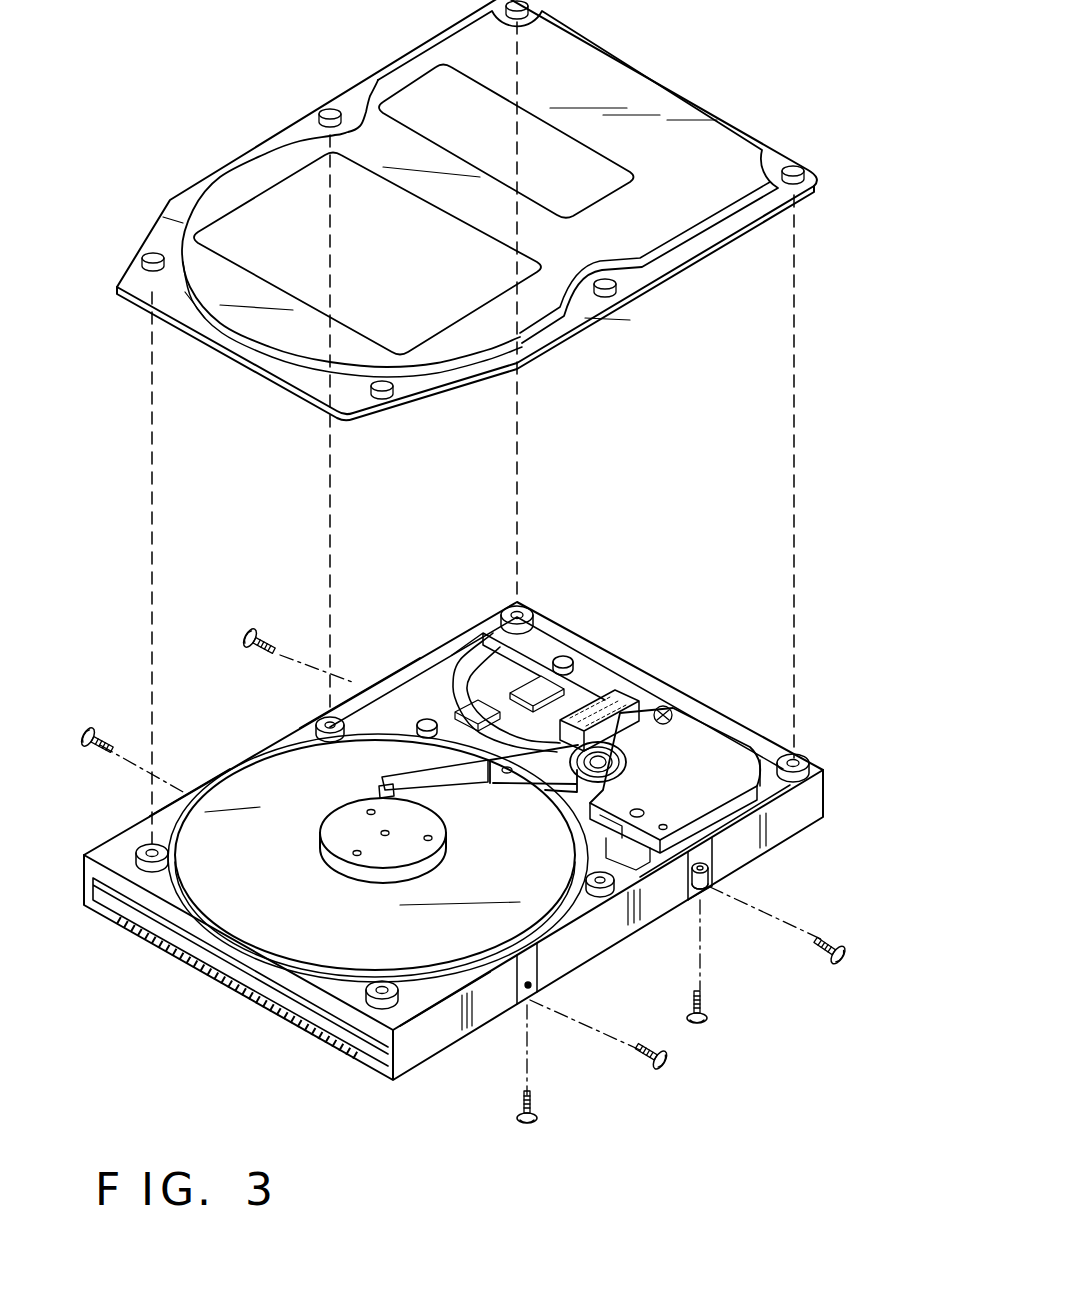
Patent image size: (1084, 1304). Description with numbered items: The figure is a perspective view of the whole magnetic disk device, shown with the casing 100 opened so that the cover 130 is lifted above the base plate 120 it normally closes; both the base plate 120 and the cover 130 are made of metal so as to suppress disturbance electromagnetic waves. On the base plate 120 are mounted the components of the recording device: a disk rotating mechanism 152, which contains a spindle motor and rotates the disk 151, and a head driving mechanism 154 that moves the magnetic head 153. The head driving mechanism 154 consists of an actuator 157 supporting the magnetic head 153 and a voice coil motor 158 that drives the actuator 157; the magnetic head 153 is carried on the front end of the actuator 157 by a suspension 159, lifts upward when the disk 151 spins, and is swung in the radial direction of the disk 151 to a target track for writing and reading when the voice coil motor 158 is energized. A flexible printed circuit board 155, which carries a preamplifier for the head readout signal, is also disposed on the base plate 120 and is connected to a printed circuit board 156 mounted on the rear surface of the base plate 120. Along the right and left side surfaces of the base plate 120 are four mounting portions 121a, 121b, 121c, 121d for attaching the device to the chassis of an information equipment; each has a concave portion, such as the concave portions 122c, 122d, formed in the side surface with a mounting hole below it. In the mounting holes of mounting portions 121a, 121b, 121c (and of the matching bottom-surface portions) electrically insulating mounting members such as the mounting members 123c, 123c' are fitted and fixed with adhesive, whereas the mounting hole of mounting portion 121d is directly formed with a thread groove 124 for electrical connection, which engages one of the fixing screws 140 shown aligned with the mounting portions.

The casing 100 is at (425, 1100).
The base plate 120 is at (796, 823).
The mounting portion 121a is at (358, 676).
The mounting portion 121b is at (188, 780).
The mounting portion 121c is at (688, 912).
The mounting portion 121d is at (517, 1018).
The concave portion 122c is at (718, 848).
The concave portion 122d is at (548, 970).
The mounting member 123c is at (764, 892).
The mounting member 123c' is at (736, 921).
The thread groove 124 is at (532, 992).
The cover 130 is at (663, 100).
The fixing screw 140 is at (249, 627).
The disk 151 is at (275, 772).
The disk rotating mechanism 152 is at (347, 846).
The magnetic head 153 is at (383, 788).
The head driving mechanism 154 is at (552, 765).
The flexible printed circuit board 155 is at (595, 695).
The printed circuit board 156 is at (113, 906).
The actuator 157 is at (526, 770).
The voice coil motor 158 is at (694, 765).
The suspension 159 is at (398, 785).